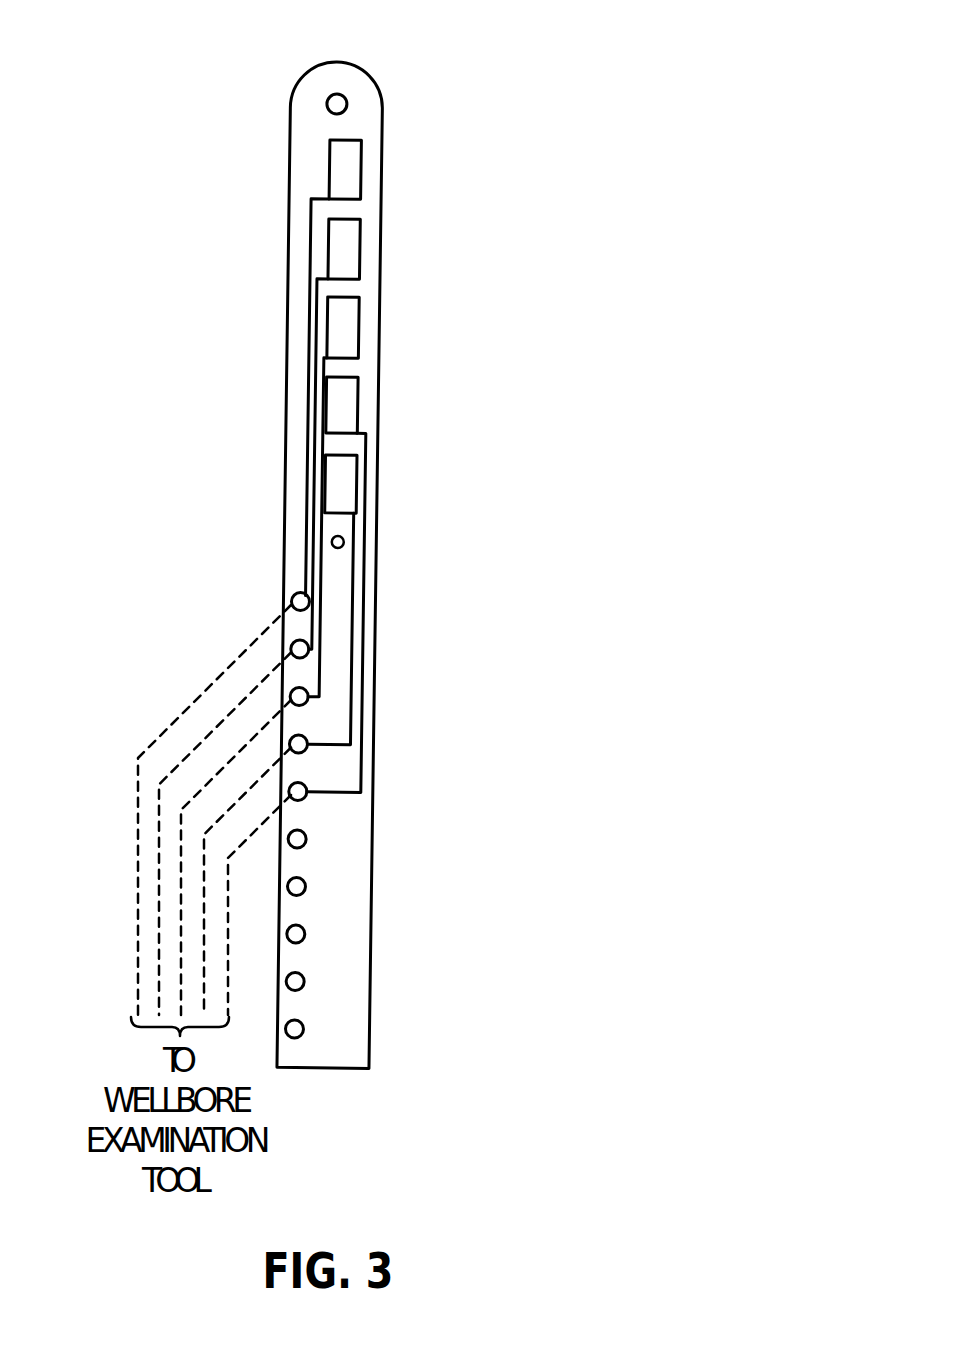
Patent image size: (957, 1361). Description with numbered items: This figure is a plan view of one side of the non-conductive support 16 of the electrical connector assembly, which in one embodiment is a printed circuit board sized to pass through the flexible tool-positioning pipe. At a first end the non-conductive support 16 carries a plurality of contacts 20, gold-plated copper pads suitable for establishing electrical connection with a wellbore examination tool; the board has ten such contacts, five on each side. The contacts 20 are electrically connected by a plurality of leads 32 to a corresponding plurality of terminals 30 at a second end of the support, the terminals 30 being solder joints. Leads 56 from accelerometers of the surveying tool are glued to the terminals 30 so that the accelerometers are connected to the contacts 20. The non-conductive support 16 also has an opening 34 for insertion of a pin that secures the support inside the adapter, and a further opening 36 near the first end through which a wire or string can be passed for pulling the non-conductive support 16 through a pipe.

The non-conductive support 16 is at (471, 397).
The contacts 20 is at (362, 248).
The terminals 30 is at (291, 650).
The leads 32 is at (317, 290).
The opening for securing means 34 is at (345, 541).
The opening for pulling wire 36 is at (347, 101).
The leads from accelerometers 56 is at (138, 837).